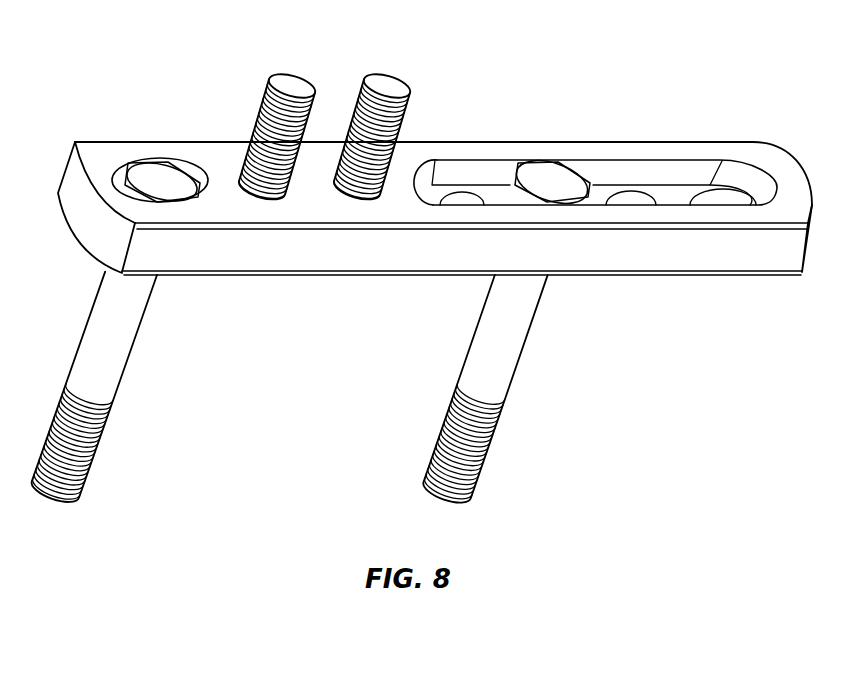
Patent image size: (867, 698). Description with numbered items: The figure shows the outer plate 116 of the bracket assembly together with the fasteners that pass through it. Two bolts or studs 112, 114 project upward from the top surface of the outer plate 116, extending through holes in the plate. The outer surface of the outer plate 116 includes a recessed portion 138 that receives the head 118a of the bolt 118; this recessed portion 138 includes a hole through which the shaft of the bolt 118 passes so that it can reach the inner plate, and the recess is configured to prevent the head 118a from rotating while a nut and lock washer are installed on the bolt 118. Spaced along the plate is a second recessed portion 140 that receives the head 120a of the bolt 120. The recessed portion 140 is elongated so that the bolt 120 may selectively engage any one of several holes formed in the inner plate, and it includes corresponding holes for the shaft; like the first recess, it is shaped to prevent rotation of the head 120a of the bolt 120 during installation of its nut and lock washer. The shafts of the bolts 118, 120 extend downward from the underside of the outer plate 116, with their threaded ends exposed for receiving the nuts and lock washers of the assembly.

The bolt or stud 112 is at (280, 80).
The bolt or stud 114 is at (385, 80).
The outer plate 116 is at (88, 138).
The bolt 118 is at (113, 358).
The head of the bolt 118a is at (162, 175).
The bolt 120 is at (510, 350).
The head of the bolt 120a is at (555, 170).
The recessed portion 138 is at (207, 195).
The recessed portion 140 is at (650, 160).